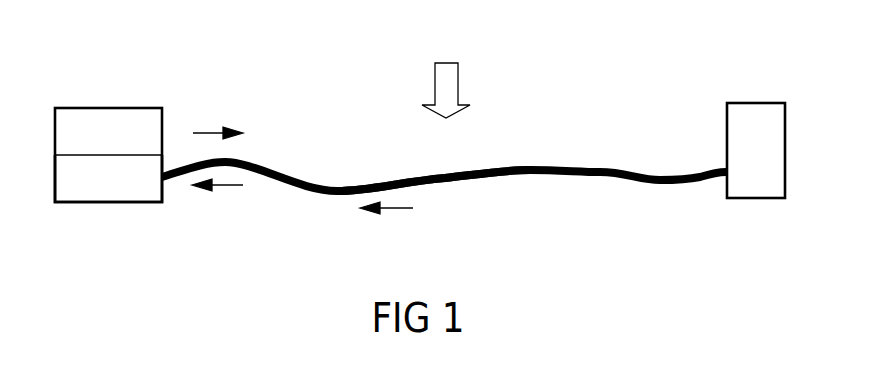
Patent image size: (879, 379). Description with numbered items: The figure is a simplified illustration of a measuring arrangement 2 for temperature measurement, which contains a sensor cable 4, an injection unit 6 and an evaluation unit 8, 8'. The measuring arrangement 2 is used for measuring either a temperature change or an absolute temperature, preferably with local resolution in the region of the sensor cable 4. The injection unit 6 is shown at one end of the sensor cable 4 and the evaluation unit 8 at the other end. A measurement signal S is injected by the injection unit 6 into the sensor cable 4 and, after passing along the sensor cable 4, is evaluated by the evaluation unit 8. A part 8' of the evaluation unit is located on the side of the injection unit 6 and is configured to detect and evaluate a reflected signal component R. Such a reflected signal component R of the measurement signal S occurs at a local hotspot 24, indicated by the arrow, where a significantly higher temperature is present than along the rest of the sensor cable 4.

The measuring arrangement 2 is at (675, 110).
The sensor cable 4 is at (578, 163).
The injection unit 6 is at (128, 108).
The evaluation unit 8 is at (756, 185).
The part of the evaluation unit 8' is at (108, 211).
The local hotspot 24 is at (447, 183).
The measurement signal S is at (208, 133).
The reflected signal component R is at (227, 186).